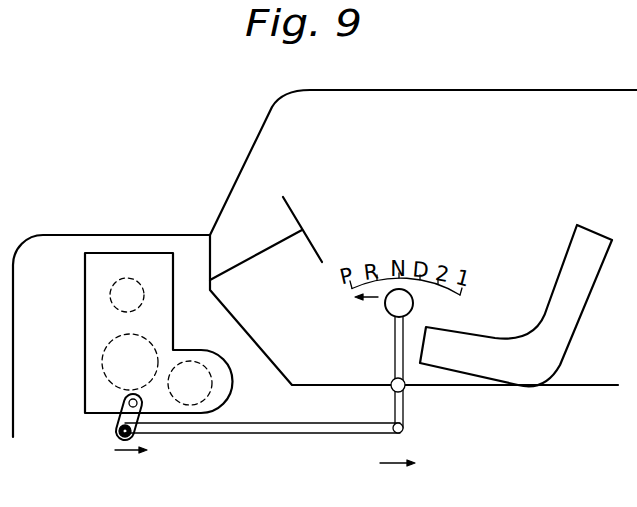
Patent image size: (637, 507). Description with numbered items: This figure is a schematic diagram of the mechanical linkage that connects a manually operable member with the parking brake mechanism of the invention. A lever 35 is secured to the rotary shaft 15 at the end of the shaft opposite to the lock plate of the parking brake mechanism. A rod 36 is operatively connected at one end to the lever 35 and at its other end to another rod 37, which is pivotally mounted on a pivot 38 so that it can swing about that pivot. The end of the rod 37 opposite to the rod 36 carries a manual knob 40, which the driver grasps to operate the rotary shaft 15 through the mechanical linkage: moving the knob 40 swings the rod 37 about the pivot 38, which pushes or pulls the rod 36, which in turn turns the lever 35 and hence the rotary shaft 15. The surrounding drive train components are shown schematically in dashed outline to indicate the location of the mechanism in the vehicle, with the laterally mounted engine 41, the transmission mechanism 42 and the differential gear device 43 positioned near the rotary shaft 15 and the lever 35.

The rotary shaft 15 is at (127, 401).
The lever 35 is at (121, 428).
The rod 36 is at (303, 434).
The rod 37 is at (405, 373).
The pivot 38 is at (405, 392).
The manual knob 40 is at (390, 307).
The laterally mounted engine 41 is at (113, 292).
The transmission mechanism 42 is at (105, 366).
The differential gear device 43 is at (200, 404).